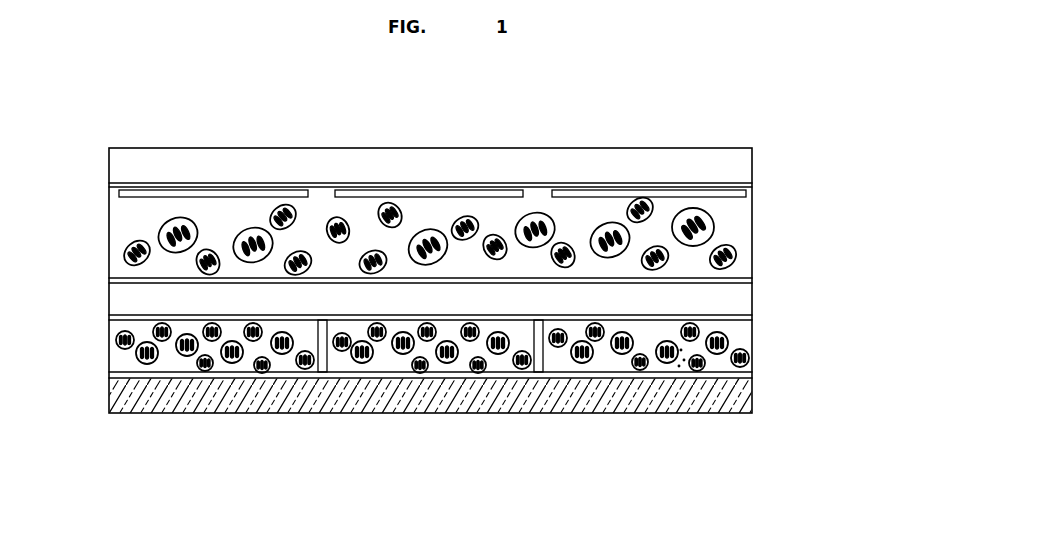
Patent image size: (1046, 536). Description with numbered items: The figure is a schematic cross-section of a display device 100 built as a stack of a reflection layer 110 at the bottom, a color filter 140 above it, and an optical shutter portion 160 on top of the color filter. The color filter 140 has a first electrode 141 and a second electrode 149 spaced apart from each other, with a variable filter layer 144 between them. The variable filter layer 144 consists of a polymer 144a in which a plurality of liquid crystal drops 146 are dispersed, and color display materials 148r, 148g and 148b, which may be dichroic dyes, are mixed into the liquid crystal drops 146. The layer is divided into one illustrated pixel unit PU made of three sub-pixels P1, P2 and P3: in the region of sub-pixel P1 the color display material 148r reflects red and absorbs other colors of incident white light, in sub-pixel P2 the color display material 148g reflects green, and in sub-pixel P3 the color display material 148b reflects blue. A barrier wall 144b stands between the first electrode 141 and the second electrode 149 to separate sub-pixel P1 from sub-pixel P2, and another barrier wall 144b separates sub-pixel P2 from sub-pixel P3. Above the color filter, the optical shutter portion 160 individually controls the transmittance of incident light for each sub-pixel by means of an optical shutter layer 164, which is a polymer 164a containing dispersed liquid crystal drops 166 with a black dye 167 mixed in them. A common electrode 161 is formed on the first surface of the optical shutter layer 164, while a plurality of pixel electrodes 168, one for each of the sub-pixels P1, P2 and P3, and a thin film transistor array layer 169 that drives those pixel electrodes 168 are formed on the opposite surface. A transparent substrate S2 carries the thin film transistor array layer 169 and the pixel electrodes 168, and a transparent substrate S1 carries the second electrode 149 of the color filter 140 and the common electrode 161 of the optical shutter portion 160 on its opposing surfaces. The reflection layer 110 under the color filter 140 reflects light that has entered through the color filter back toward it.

The display device 100 is at (745, 126).
The reflection layer 110 is at (748, 406).
The color filter 140 is at (436, 376).
The first electrode 141 is at (752, 378).
The variable filter layer 144 is at (465, 383).
The polymer 144a is at (745, 341).
The barrier wall 144b is at (538, 372).
The liquid crystal drops 146 is at (680, 352).
The color display material 148r is at (232, 363).
The color display material 148g is at (447, 363).
The color display material 148b is at (665, 360).
The second electrode 149 is at (752, 317).
The optical shutter portion 160 is at (458, 238).
The common electrode 161 is at (746, 280).
The optical shutter layer 164 is at (488, 236).
The polymer 164a is at (745, 254).
The liquid crystal drops 166 is at (714, 235).
The black dye 167 is at (703, 221).
The pixel electrodes 168 is at (741, 193).
The thin film transistor array layer 169 is at (752, 181).
The transparent substrate S1 is at (113, 296).
The transparent substrate S2 is at (113, 163).
The sub-pixel P1 is at (108, 455).
The sub-pixel P2 is at (325, 455).
The sub-pixel P3 is at (543, 455).
The pixel unit PU is at (215, 497).